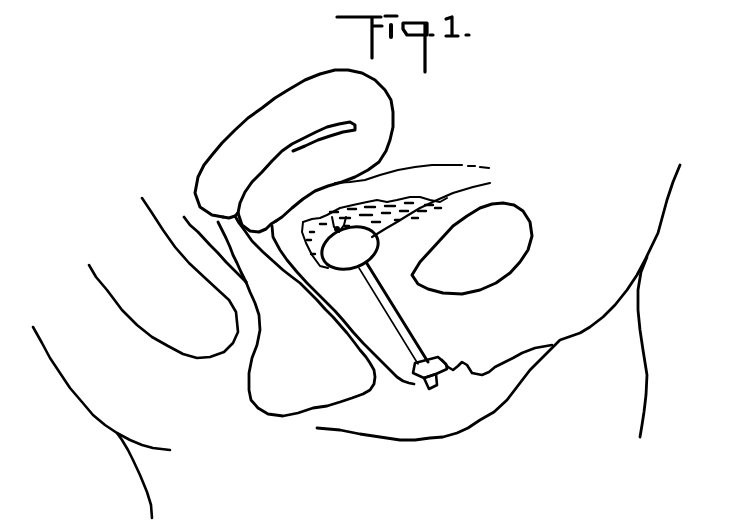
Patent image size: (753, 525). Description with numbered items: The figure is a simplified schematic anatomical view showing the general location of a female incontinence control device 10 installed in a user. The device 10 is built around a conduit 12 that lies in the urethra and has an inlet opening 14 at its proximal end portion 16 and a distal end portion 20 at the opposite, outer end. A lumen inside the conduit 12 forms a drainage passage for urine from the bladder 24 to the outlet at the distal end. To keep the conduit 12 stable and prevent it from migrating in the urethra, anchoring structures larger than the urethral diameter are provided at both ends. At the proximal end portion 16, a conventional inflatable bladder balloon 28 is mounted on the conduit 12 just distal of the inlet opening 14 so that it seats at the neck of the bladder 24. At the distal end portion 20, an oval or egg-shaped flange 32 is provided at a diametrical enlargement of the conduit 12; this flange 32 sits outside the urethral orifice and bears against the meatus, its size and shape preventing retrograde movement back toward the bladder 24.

The female incontinence control device 10 is at (440, 335).
The conduit 12 is at (403, 312).
The inlet opening 14 is at (334, 229).
The proximal end portion 16 is at (374, 204).
The distal end portion 20 is at (428, 389).
The bladder 24 is at (412, 177).
The inflatable bladder balloon 28 is at (362, 245).
The flange 32 is at (442, 360).